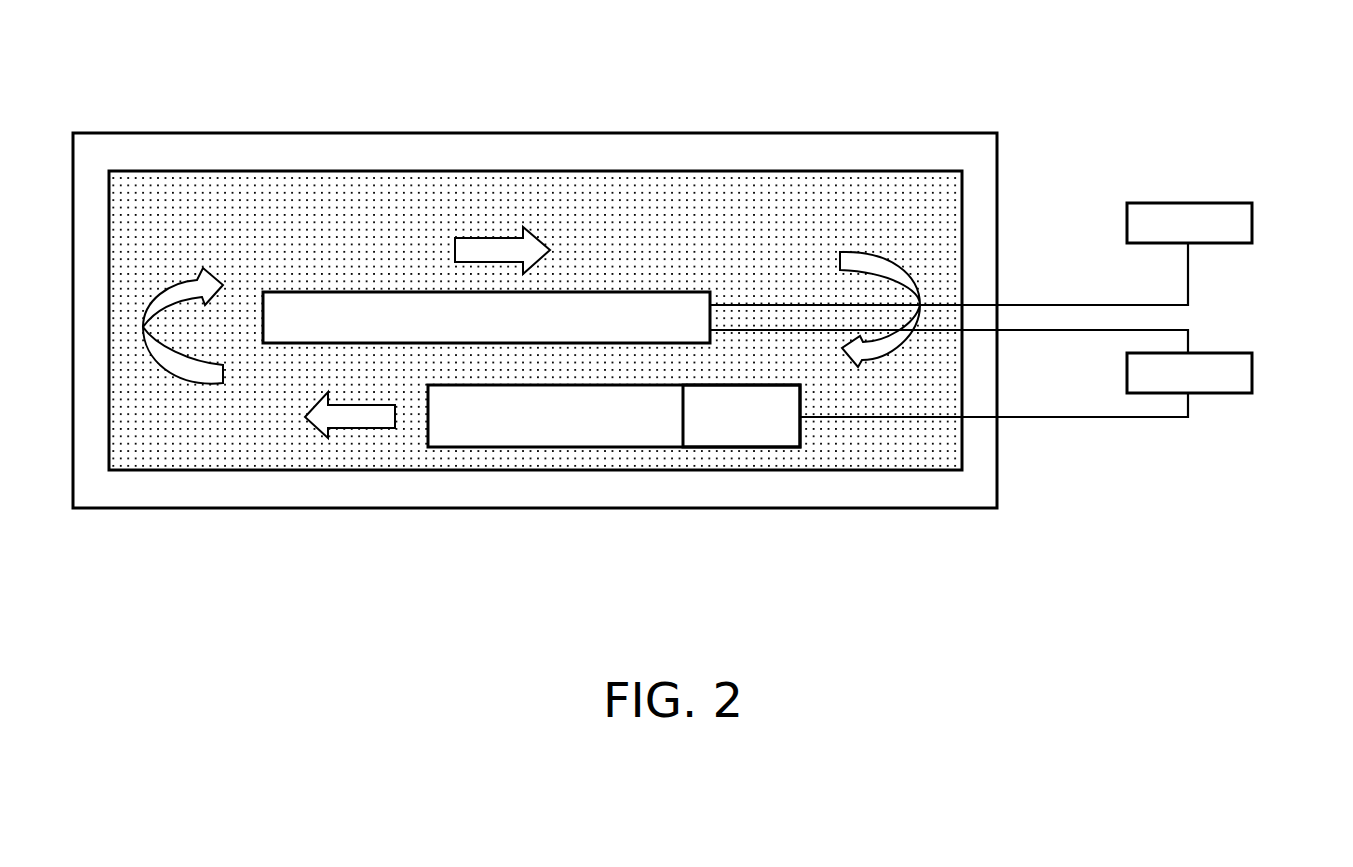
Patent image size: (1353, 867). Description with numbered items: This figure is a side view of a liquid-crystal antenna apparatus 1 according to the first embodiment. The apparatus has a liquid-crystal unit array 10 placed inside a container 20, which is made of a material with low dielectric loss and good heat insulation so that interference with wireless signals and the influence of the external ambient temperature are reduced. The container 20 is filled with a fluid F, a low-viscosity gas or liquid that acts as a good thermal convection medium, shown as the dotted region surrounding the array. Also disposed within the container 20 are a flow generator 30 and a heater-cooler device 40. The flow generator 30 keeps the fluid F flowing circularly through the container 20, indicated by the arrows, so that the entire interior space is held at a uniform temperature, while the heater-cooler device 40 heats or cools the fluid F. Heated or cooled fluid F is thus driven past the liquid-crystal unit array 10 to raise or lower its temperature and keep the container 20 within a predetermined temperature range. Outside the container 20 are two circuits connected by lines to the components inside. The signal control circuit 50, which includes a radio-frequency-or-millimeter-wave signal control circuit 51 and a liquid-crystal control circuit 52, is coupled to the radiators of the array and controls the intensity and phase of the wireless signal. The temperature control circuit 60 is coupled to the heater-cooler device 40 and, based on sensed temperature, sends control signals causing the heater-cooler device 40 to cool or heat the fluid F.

The liquid-crystal antenna apparatus 1 is at (1292, 95).
The liquid-crystal unit array 10 is at (355, 312).
The container 20 is at (555, 153).
The flow generator 30 is at (557, 423).
The heater-cooler device 40 is at (743, 425).
The signal control circuit 50 is at (1193, 186).
The radio-frequency-or-millimeter-wave signal control circuit 51 is at (1189, 223).
The liquid-crystal control circuit 52 is at (1188, 223).
The temperature control circuit 60 is at (1230, 373).
The fluid F is at (183, 215).